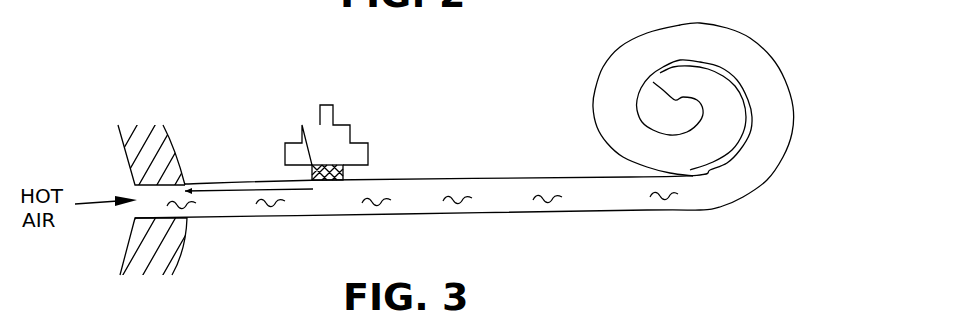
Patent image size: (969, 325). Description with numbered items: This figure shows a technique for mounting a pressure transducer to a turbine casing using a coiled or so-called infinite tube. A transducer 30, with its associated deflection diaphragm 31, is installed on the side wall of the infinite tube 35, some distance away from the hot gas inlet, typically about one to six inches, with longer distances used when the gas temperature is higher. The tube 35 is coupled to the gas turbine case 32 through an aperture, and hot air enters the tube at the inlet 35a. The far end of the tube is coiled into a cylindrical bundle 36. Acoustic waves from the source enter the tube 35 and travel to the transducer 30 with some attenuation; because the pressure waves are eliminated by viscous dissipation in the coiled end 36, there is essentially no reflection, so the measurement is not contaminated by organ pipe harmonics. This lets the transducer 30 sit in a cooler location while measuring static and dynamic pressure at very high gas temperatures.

The transducer 30 is at (343, 133).
The deflection diaphragm 31 is at (312, 177).
The gas turbine case 32 is at (135, 165).
The infinite tube 35 is at (595, 213).
The inlet 35a is at (135, 216).
The coiled end 36 is at (752, 30).